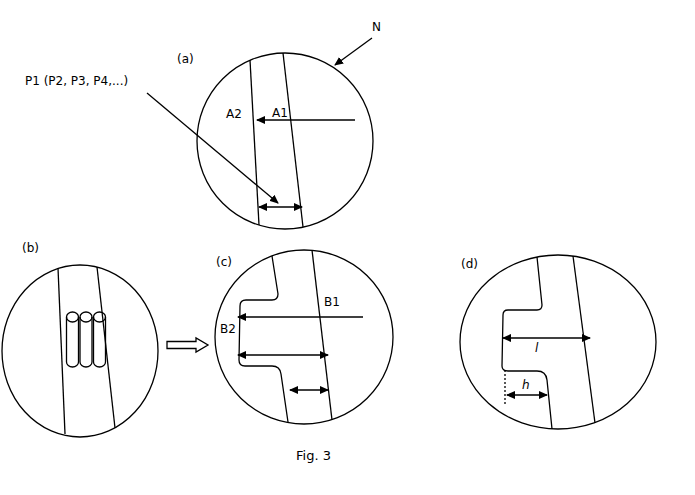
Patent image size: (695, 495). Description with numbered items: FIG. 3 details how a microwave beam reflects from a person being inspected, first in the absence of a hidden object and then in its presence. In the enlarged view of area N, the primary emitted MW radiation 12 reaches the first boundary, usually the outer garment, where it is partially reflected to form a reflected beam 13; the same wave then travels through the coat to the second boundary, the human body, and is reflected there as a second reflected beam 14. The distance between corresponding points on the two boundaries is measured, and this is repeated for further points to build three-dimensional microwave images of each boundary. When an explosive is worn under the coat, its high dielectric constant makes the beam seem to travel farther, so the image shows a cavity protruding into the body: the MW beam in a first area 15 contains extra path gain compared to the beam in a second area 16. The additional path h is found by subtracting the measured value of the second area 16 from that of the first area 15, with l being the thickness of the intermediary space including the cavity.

The primary emitted MW radiation 12 is at (306, 111).
The reflected beam 13 is at (297, 120).
The second reflected beam 14 is at (257, 120).
The first area 15 is at (283, 347).
The second area 16 is at (309, 399).